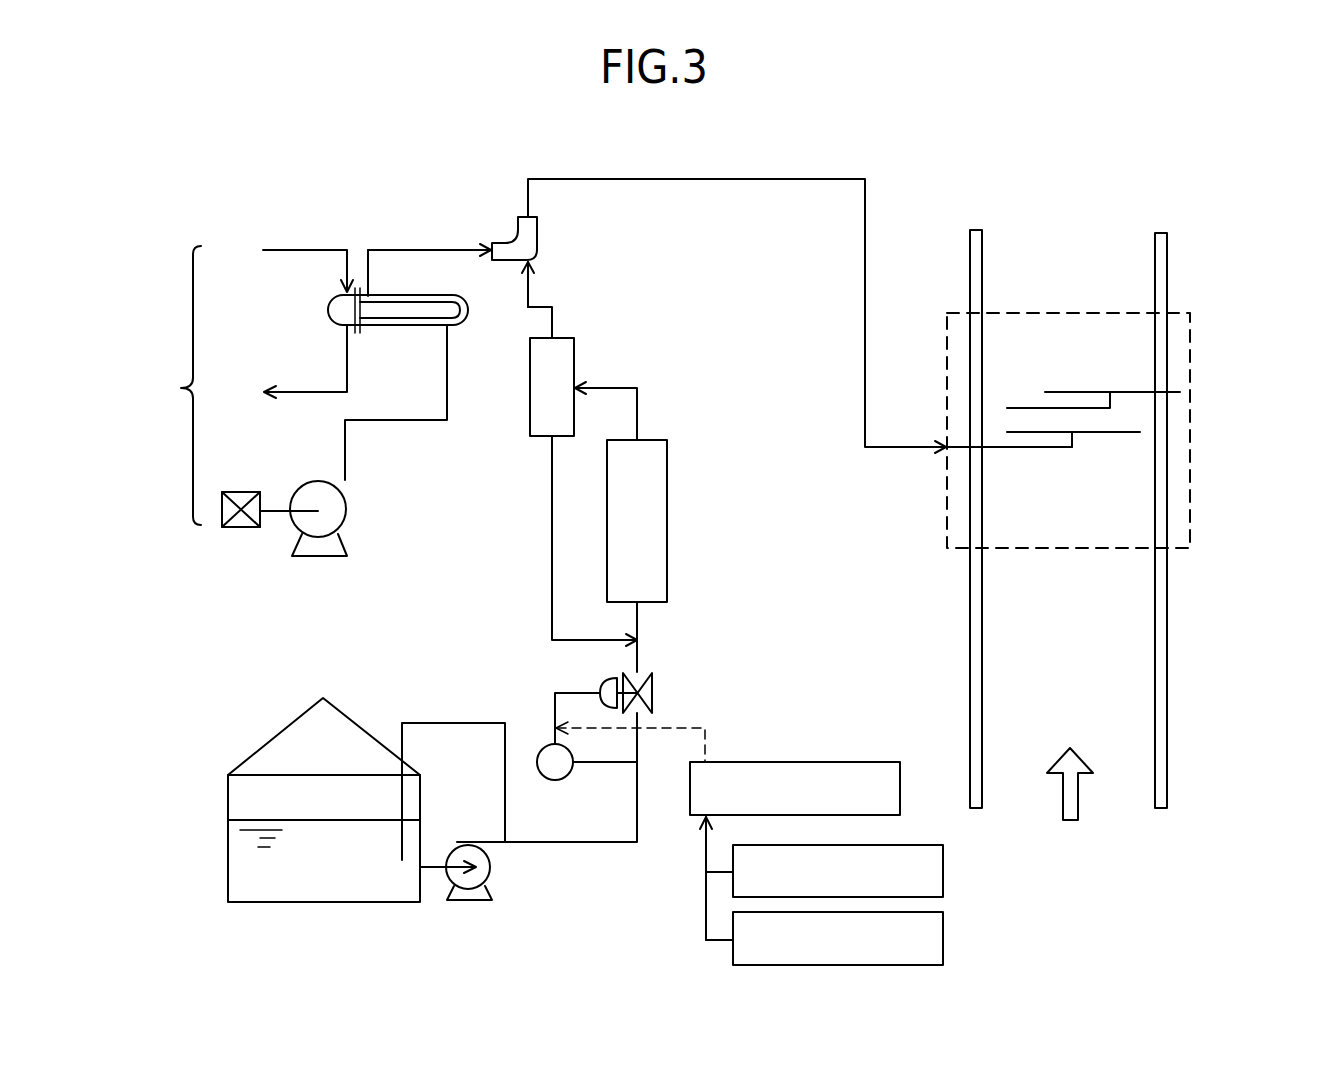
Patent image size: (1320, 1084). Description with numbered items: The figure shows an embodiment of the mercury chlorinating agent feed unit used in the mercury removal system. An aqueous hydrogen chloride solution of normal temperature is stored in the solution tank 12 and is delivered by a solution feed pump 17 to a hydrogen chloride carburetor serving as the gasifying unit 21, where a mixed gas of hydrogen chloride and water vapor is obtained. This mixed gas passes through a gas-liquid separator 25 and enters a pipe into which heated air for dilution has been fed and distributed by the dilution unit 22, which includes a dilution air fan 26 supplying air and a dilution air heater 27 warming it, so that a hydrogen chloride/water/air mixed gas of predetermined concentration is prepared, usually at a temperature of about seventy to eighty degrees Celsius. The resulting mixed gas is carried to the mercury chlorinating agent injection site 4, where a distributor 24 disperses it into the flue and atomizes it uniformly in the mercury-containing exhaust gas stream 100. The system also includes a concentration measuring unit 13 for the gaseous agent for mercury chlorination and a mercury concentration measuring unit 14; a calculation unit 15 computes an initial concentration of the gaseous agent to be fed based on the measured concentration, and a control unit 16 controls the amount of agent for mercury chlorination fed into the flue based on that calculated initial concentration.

The mercury chlorinating agent injection site 4 is at (1111, 519).
The solution tank 12 is at (228, 805).
The concentration measuring unit 13 is at (943, 877).
The mercury concentration measuring unit 14 is at (943, 935).
The calculation unit 15 is at (795, 752).
The control unit 16 is at (775, 762).
The solution feed pump 17 is at (490, 866).
The gasifying unit 21 is at (667, 492).
The dilution unit 22 is at (300, 401).
The distributor 24 is at (1107, 434).
The gas-liquid separator 25 is at (575, 355).
The dilution air fan 26 is at (305, 495).
The dilution air heater 27 is at (328, 310).
The mercury-containing exhaust gas stream 100 is at (1078, 797).